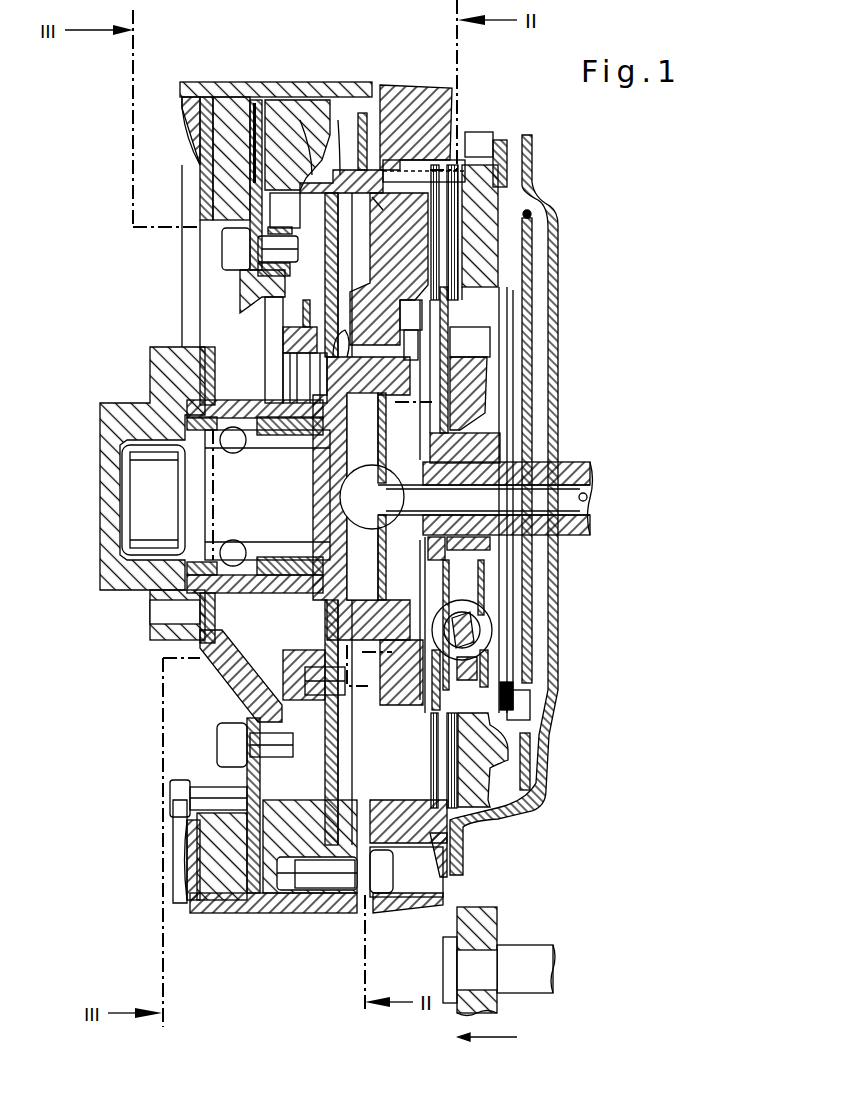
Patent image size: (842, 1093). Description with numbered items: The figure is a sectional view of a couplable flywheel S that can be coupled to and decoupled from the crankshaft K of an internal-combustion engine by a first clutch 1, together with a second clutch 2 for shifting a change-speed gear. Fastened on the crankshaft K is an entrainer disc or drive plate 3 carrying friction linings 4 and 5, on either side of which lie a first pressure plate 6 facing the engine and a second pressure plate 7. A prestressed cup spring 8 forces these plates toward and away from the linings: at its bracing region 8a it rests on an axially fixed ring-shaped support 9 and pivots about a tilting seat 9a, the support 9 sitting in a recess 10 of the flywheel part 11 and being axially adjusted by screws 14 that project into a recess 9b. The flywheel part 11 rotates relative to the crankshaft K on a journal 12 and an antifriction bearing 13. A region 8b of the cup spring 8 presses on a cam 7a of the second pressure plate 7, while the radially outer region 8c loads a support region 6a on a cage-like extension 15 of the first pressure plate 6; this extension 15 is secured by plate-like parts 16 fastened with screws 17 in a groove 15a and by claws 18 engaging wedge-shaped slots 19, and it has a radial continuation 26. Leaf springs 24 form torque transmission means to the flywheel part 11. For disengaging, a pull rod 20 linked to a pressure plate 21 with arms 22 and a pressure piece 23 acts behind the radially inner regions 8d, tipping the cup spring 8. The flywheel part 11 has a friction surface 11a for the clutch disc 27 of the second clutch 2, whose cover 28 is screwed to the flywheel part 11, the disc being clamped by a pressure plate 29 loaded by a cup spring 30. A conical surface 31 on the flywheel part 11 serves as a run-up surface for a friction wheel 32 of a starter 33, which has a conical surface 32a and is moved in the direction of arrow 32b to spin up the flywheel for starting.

The first clutch 1 is at (236, 985).
The second clutch 2 is at (427, 955).
The entrainer disc or drive plate 3 is at (212, 648).
The friction lining 4 is at (250, 898).
The friction lining 5 is at (258, 105).
The first pressure plate 6 is at (222, 100).
The support region 6a is at (362, 140).
The second pressure plate 7 is at (304, 806).
The cam or dog 7a is at (326, 183).
The cup or disc spring 8 is at (330, 258).
The bracing region of cup spring 8a is at (322, 155).
The radially inner region of cup spring 8b is at (310, 170).
The radially outer region of cup spring 8c is at (340, 170).
The radially inner regions of cup spring 8d is at (271, 708).
The support or abutment 9 is at (389, 269).
The tilting seat 9a is at (397, 110).
The recess in support 9b is at (378, 198).
The recess of flywheel part 10 is at (386, 832).
The flywheel part 11 is at (356, 368).
The friction surface 11a is at (440, 742).
The journal 12 is at (280, 512).
The antifriction bearing 13 is at (200, 455).
The screws 14 is at (415, 167).
The cage-like extension 15 is at (325, 94).
The slot or groove 15a is at (207, 93).
The plate-like parts 16 is at (205, 876).
The screws 17 is at (172, 801).
The claws 18 is at (195, 845).
The slots 19 is at (180, 905).
The tension or pull rod 20 is at (583, 497).
The pressure plate 21 is at (366, 496).
The arms 22 is at (358, 680).
The pressure piece 23 is at (292, 657).
The leaf springs 24 is at (355, 905).
The radial continuation 26 is at (341, 178).
The clutch disc 27 is at (440, 265).
The housing or cover 28 is at (549, 330).
The pressure plate 29 is at (480, 212).
The cup or disc spring 30 is at (527, 298).
The conical surface 31 is at (380, 915).
The friction wheel 32 is at (484, 928).
The conical run-up surface 32a is at (478, 906).
The arrow 32b is at (508, 1037).
The starter 33 is at (596, 979).
The crankshaft K is at (125, 412).
The flywheel S is at (304, 985).